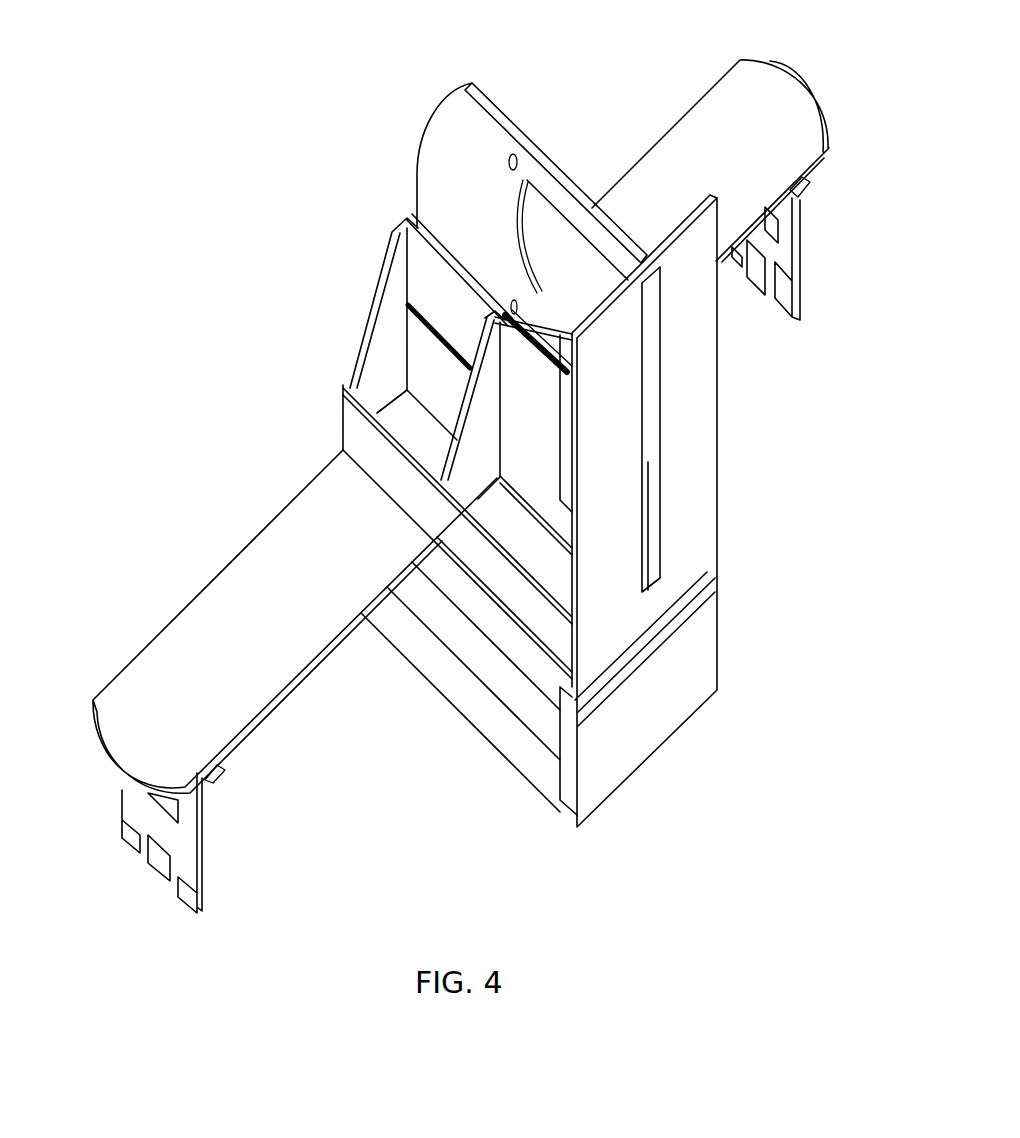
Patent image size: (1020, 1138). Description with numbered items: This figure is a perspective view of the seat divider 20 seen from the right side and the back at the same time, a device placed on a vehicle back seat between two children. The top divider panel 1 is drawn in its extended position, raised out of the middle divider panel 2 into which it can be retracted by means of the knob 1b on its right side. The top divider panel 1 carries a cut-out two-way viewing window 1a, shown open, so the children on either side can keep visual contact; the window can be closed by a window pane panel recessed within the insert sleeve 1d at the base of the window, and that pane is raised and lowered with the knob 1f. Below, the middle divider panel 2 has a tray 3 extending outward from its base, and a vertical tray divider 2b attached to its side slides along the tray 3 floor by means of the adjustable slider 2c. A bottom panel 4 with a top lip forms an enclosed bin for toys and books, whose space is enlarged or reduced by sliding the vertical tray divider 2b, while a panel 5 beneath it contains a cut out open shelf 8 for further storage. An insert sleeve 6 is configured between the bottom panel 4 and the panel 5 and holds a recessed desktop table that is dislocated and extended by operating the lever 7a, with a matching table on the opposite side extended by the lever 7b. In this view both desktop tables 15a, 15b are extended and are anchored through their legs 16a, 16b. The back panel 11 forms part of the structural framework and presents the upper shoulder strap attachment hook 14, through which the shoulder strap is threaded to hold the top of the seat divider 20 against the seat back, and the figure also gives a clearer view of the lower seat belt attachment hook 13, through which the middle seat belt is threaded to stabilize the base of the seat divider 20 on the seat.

The seat divider 20 is at (287, 150).
The top divider panel 1 is at (423, 124).
The two-way viewing window 1a is at (545, 225).
The knob 1b is at (506, 163).
The insert sleeve 1d is at (540, 337).
The knob 1f is at (505, 298).
The middle divider panel 2 is at (535, 463).
The vertical tray divider 2b is at (455, 412).
The adjustable slider 2c is at (430, 360).
The tray 3 is at (535, 538).
The bottom panel 4 is at (533, 600).
The panel 5 is at (523, 677).
The insert sleeve 6 is at (447, 563).
The cut out open shelf 8 is at (423, 637).
The lever 7a is at (219, 777).
The lever 7b is at (805, 200).
The back panel 11 is at (716, 523).
The seat belt attachment hook 13 is at (575, 768).
The shoulder strap attachment hook 14 is at (663, 437).
The desktop table 15a is at (232, 550).
The desktop table 15b is at (661, 132).
The leg 16a is at (203, 888).
The leg 16b is at (763, 296).